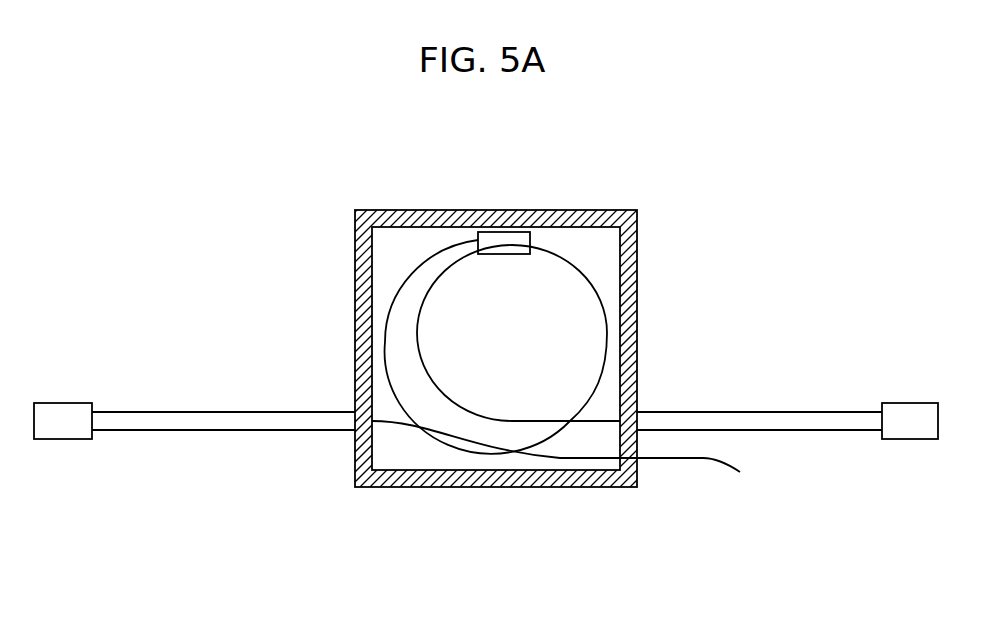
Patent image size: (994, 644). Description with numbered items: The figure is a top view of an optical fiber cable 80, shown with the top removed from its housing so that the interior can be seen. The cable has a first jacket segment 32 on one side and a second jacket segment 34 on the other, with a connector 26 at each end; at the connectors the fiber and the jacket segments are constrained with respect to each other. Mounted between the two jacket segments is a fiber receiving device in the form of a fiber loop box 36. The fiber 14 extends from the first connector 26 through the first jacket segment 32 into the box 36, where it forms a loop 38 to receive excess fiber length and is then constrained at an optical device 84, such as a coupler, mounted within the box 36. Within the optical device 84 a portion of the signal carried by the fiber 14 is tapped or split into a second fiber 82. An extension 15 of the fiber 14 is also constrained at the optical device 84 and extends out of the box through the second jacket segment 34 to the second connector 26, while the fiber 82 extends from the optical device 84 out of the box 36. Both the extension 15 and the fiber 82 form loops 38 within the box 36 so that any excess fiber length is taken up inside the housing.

The fiber 14 is at (606, 356).
The extension of fiber 15 is at (435, 243).
The connector 26 is at (75, 425).
The first jacket segment 32 is at (165, 411).
The second jacket segment 34 is at (770, 411).
The fiber loop box 36 is at (356, 258).
The loop 38 is at (581, 273).
The optical fiber cable 80 is at (280, 475).
The fiber 82 is at (672, 460).
The optical device 84 is at (503, 243).